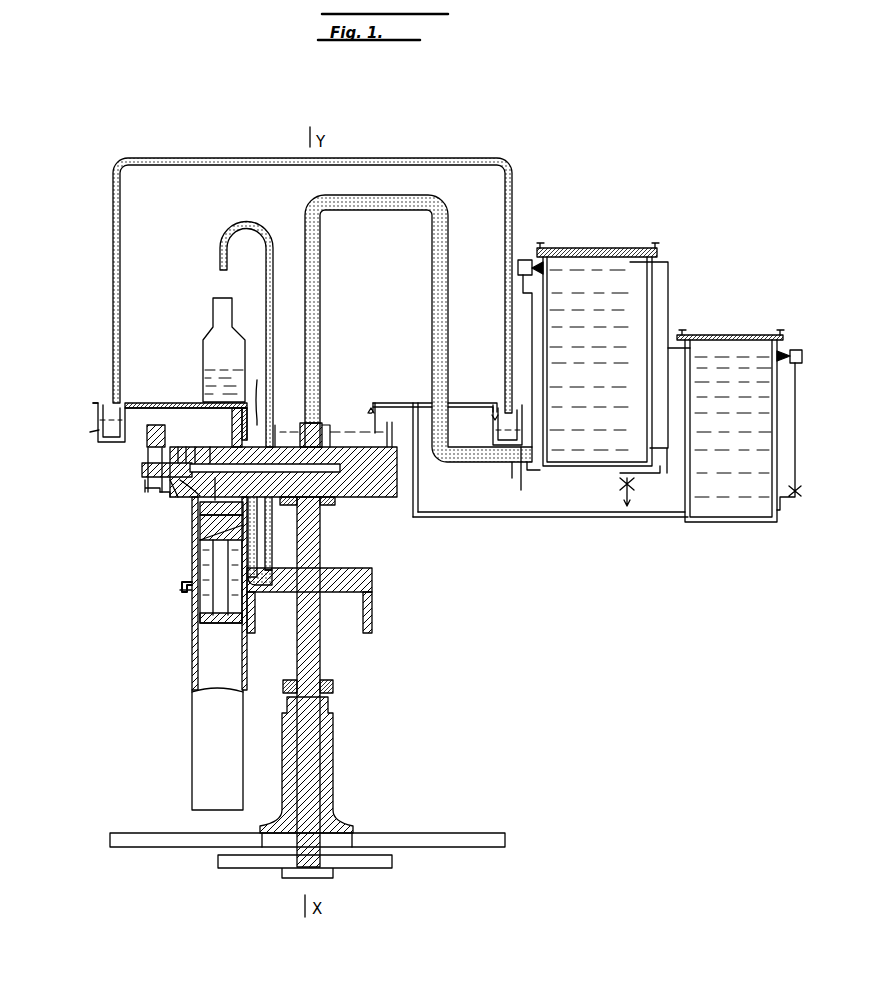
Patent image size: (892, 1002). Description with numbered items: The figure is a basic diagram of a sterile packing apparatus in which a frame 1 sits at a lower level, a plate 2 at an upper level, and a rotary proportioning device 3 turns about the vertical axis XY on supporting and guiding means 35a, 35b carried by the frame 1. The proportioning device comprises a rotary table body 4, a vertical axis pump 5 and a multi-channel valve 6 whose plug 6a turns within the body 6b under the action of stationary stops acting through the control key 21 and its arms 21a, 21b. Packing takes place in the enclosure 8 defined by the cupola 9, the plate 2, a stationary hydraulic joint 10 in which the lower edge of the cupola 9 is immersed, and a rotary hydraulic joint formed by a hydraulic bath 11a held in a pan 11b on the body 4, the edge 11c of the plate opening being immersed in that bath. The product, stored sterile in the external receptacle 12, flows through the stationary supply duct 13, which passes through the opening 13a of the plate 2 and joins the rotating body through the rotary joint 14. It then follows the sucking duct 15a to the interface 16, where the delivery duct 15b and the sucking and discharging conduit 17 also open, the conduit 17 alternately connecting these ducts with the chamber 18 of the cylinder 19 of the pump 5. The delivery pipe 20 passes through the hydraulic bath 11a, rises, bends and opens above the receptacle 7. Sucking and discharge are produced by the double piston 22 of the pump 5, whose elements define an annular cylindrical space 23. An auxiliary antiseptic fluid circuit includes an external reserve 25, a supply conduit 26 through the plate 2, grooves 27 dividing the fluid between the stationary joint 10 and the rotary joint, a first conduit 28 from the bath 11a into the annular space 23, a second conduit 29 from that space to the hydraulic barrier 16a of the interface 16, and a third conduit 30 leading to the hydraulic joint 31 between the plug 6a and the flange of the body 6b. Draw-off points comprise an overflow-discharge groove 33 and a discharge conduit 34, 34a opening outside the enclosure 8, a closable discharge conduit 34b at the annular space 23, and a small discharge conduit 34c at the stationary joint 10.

The frame 1 is at (412, 832).
The plate 2 is at (140, 406).
The rotary proportioning device 3 is at (327, 560).
The rotary table body 4 is at (395, 500).
The vertical axis pump 5 is at (182, 742).
The multi-channel valve 6 is at (163, 435).
The plug 6a is at (176, 506).
The valve body 6b is at (234, 440).
The receptacle 7 is at (231, 338).
The enclosure 8 is at (376, 287).
The cupola 9 is at (506, 200).
The stationary hydraulic joint 10 is at (102, 434).
The hydraulic bath 11a is at (357, 428).
The pan 11b is at (418, 450).
The edge of the plate opening 11c is at (375, 403).
The product receptacle 12 is at (655, 292).
The supply duct 13 is at (443, 300).
The plate opening 13a is at (473, 405).
The rotary joint 14 is at (330, 425).
The sucking duct 15a is at (390, 498).
The delivery duct 15b is at (282, 425).
The interface 16 is at (200, 478).
The hydraulic barrier 16a is at (200, 447).
The sucking and discharging conduit 17 is at (215, 500).
The chamber 18 is at (221, 507).
The cylinder 19 is at (192, 658).
The delivery pipe 20 is at (273, 295).
The control key 21 is at (145, 462).
The key arm 21a is at (162, 494).
The key arm 21b is at (145, 488).
The double piston 22 is at (190, 592).
The annular cylindrical space 23 is at (205, 605).
The auxiliary liquid reserve 25 is at (712, 335).
The auxiliary supply conduit 26 is at (557, 518).
The grooves 27 is at (395, 403).
The first conduit 28 is at (280, 585).
The second conduit 29 is at (257, 390).
The third conduit 30 is at (205, 520).
The hydraulic joint 31 is at (172, 495).
The overflow-discharge groove 33 is at (183, 450).
The discharge conduit 34 is at (326, 504).
The discharge conduit portion 34a is at (332, 590).
The closable discharge conduit 34b is at (182, 589).
The small discharge conduit 34c is at (512, 478).
The supporting and guiding means 35a is at (333, 688).
The supporting and guiding means 35b is at (332, 752).